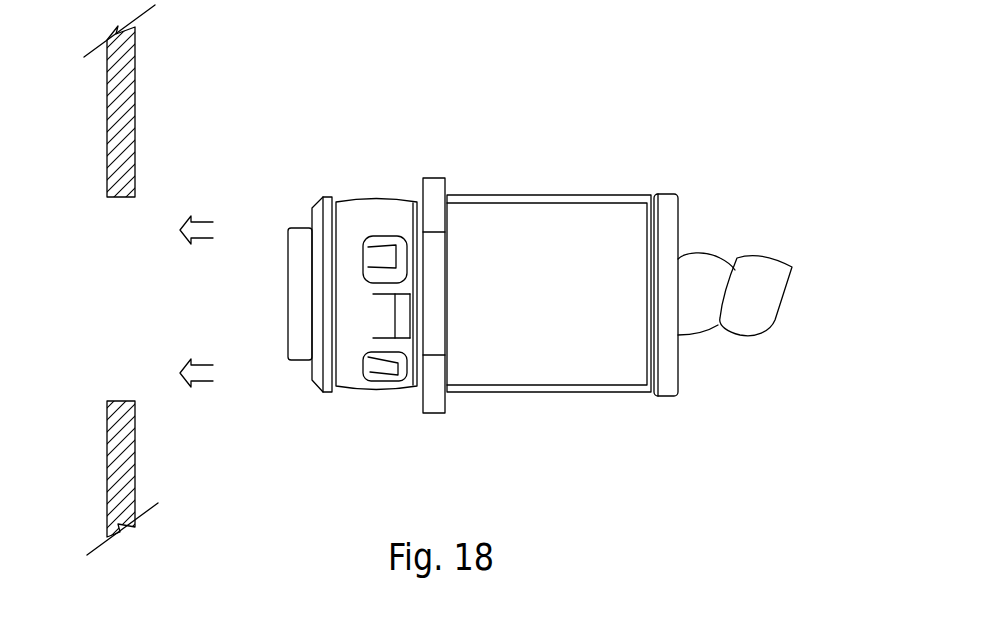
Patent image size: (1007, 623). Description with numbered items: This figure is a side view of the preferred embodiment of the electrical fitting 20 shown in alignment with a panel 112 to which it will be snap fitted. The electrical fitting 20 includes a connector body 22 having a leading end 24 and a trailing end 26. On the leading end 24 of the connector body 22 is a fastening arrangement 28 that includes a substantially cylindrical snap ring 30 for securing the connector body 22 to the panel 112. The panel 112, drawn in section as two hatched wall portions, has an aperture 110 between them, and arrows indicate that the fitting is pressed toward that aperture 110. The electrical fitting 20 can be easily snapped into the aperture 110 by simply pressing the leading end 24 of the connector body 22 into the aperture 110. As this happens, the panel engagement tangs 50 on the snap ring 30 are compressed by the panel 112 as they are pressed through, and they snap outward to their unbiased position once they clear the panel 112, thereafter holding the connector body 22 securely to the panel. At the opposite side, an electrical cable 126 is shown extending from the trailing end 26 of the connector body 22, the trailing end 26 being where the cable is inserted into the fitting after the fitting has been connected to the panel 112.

The electrical fitting 20 is at (580, 121).
The connector body 22 is at (568, 292).
The leading end 24 is at (288, 295).
The trailing end 26 is at (678, 230).
The fastening arrangement 28 is at (355, 165).
The snap ring 30 is at (392, 227).
The panel engagement tangs 50 is at (380, 380).
The aperture 110 is at (125, 282).
The panel 112 is at (120, 87).
The electrical cable 126 is at (743, 335).